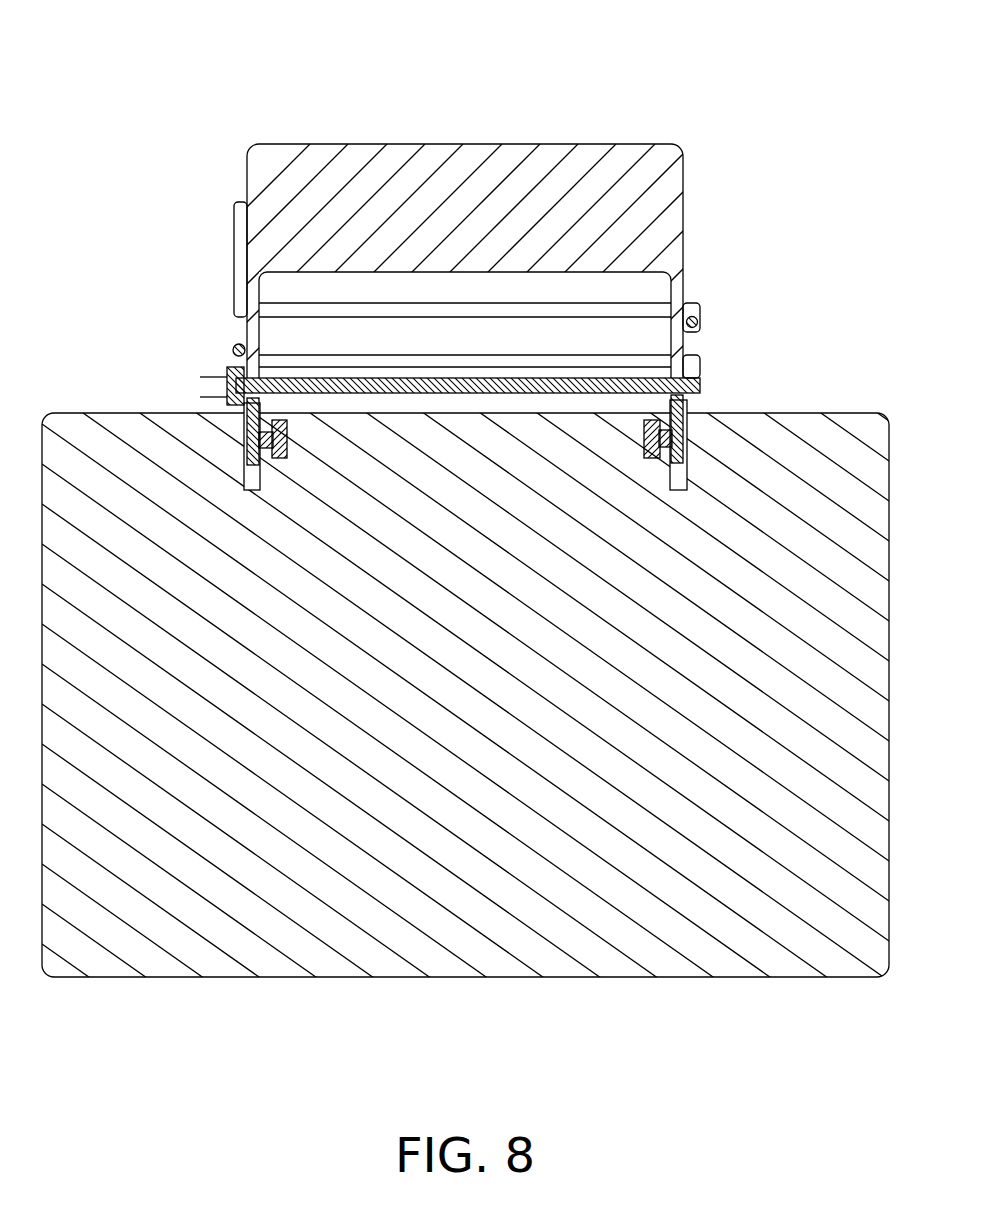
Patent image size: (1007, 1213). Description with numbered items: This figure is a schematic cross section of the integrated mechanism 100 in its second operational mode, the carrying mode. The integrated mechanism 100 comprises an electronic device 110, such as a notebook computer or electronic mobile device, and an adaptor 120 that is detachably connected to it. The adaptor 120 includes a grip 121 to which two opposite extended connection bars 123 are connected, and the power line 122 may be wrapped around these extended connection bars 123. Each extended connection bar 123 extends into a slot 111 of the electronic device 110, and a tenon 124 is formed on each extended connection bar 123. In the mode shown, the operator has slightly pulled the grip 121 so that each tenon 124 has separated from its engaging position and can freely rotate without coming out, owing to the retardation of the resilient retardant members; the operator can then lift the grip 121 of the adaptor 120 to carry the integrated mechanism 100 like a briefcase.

The integrated mechanism 100 is at (101, 31).
The electronic device 110 is at (569, 979).
The slot 111 is at (243, 467).
The adaptor 120 is at (496, 301).
The grip 121 is at (440, 163).
The power line 122 is at (643, 308).
The extended connection bar 123 is at (227, 402).
The tenon 124 is at (277, 463).